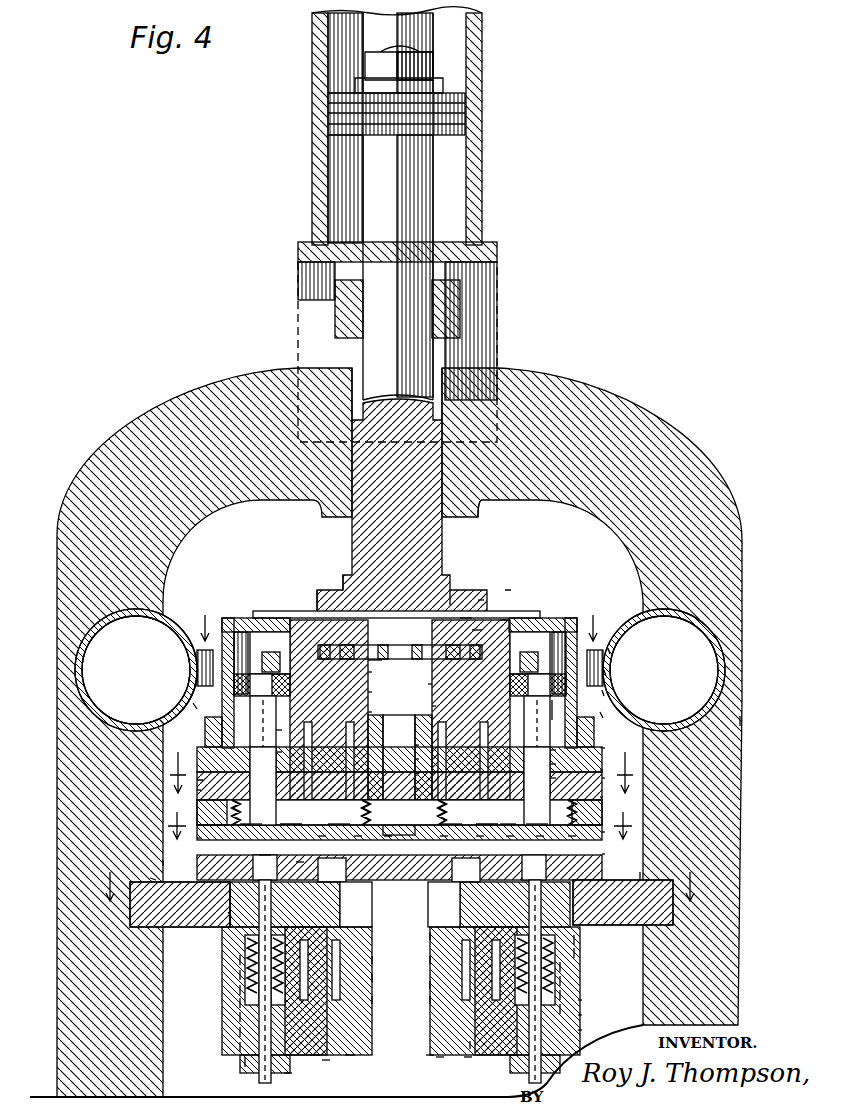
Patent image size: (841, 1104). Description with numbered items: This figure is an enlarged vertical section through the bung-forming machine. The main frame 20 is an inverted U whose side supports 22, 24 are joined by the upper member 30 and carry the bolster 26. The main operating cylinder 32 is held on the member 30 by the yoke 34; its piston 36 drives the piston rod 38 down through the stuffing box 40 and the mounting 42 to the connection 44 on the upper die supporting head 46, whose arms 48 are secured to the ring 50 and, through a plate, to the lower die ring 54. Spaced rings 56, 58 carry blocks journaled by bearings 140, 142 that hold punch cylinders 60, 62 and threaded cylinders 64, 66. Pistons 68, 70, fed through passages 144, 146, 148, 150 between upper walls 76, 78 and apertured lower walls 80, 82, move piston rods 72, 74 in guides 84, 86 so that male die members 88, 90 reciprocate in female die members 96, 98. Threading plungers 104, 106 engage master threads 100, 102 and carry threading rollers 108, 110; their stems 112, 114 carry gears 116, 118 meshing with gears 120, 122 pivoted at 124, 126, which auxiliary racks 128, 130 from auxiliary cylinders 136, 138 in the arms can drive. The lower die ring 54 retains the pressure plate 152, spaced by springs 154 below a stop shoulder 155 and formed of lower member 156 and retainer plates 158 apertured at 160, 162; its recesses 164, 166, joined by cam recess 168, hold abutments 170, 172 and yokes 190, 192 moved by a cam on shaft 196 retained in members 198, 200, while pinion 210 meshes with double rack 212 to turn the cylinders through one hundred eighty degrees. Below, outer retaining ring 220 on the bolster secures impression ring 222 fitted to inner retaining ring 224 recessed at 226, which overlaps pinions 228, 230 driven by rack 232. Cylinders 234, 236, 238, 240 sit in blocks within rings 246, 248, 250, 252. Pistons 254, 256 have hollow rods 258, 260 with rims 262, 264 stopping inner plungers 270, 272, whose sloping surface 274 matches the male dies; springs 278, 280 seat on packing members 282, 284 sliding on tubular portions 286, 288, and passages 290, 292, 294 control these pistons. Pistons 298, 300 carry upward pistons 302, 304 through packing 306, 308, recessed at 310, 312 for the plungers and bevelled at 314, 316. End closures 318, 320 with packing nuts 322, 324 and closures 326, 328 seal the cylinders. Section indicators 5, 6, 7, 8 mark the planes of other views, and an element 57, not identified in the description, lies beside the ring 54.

The housing 20 is at (590, 390).
The housing wall 22 is at (736, 722).
The housing wall 24 is at (60, 716).
The flange 26 is at (130, 902).
The stem 30 is at (512, 372).
The tube 32 is at (483, 144).
The flange 34 is at (497, 268).
The collar 36 is at (468, 104).
The rod 38 is at (366, 162).
The seal 40 is at (340, 300).
The cavity 42 is at (478, 512).
The boss 44 is at (338, 577).
The plate 46 is at (466, 618).
The port 48 is at (508, 590).
The passage 50 is at (605, 748).
The passage 54 is at (600, 797).
The port 56 is at (606, 672).
The passage 57 is at (622, 778).
The chamber 58 is at (372, 692).
The sleeve 60 is at (559, 632).
The valve body 62 is at (232, 630).
The plate 64 is at (481, 600).
The piston 66 is at (312, 632).
The sleeve 68 is at (569, 618).
The chamber 70 is at (263, 632).
The stem 72 is at (533, 745).
The stem 74 is at (263, 746).
The piston 76 is at (538, 618).
The sleeve 78 is at (250, 632).
The passage 80 is at (554, 707).
The packing 82 is at (236, 708).
The passage 84 is at (541, 750).
The passage 86 is at (160, 722).
The passage 88 is at (543, 778).
The passage 90 is at (266, 772).
The spring 96 is at (509, 815).
The passage 98 is at (266, 752).
The packing 100 is at (526, 660).
The chamber 102 is at (372, 672).
The valve stem 104 is at (400, 775).
The passage 106 is at (265, 730).
The passage 108 is at (541, 764).
The valve stem 110 is at (405, 758).
The plate 112 is at (477, 630).
The chamber 114 is at (383, 660).
The plate 116 is at (506, 620).
The valve 118 is at (290, 650).
The bolt 120 is at (414, 645).
The bolt 122 is at (381, 643).
The plate 124 is at (452, 600).
The flange 126 is at (340, 604).
The port 128 is at (612, 650).
The port 130 is at (198, 675).
The ring 136 is at (726, 636).
The ring 138 is at (75, 655).
The chamber 140 is at (434, 706).
The chamber 142 is at (372, 712).
The plug 144 is at (597, 648).
The port 146 is at (604, 692).
The plug 148 is at (197, 664).
The port 150 is at (195, 706).
The passage 152 is at (605, 832).
The spring 154 is at (453, 815).
The passage 155 is at (196, 792).
The passage 156 is at (200, 838).
The plate 158 is at (391, 815).
The spring 160 is at (539, 815).
The spring 162 is at (254, 815).
The plate 164 is at (572, 836).
The plate 166 is at (264, 836).
The spring 168 is at (341, 815).
The plate 170 is at (480, 836).
The plate 172 is at (322, 836).
The stem 190 is at (410, 842).
The plate 192 is at (358, 836).
The chamber 196 is at (428, 684).
The stem 198 is at (405, 788).
The stem 200 is at (403, 744).
The passage 210 is at (600, 770).
The passage 212 is at (46, 746).
The passage 220 is at (162, 863).
The passage 222 is at (150, 880).
The passage 224 is at (388, 836).
The passage 226 is at (605, 854).
The flange 228 is at (675, 902).
The passage 230 is at (230, 915).
The cylinder 232 is at (395, 926).
The nut 234 is at (468, 1058).
The cylinder 236 is at (428, 1055).
The cylinder 238 is at (240, 1032).
The piston 240 is at (350, 1056).
The piston 246 is at (430, 960).
The piston 248 is at (430, 935).
The spring 250 is at (372, 978).
The spring 252 is at (372, 960).
The spring 254 is at (560, 995).
The spring 256 is at (240, 1003).
The spring 258 is at (560, 967).
The spring 260 is at (240, 960).
The plate 262 is at (510, 836).
The plate 264 is at (236, 860).
The sleeve 270 is at (575, 952).
The cylinder 272 is at (225, 935).
The plate 274 is at (540, 836).
The sleeve 278 is at (560, 981).
The sleeve 280 is at (240, 990).
The passage 282 is at (580, 1000).
The sleeve 284 is at (240, 1017).
The passage 286 is at (580, 1030).
The rod 288 is at (258, 1078).
The packing 290 is at (560, 1009).
The sleeve 292 is at (576, 940).
The sleeve 294 is at (240, 975).
The nut 298 is at (440, 1058).
The nut 300 is at (327, 1060).
The cylinder 302 is at (430, 1000).
The piston 304 is at (316, 1056).
The piston 306 is at (430, 985).
The piston 308 is at (372, 1000).
The port 310 is at (467, 870).
The port 312 is at (333, 870).
The plate 314 is at (444, 836).
The plate 316 is at (300, 862).
The passage 318 is at (580, 1015).
The packing 320 is at (240, 1047).
The rod 322 is at (530, 1050).
The packing 324 is at (245, 1062).
The nut 326 is at (470, 1045).
The nut 328 is at (288, 1073).
The section line 5 is at (398, 619).
The section line 6 is at (401, 763).
The section line 7 is at (400, 816).
The section line 8 is at (398, 877).